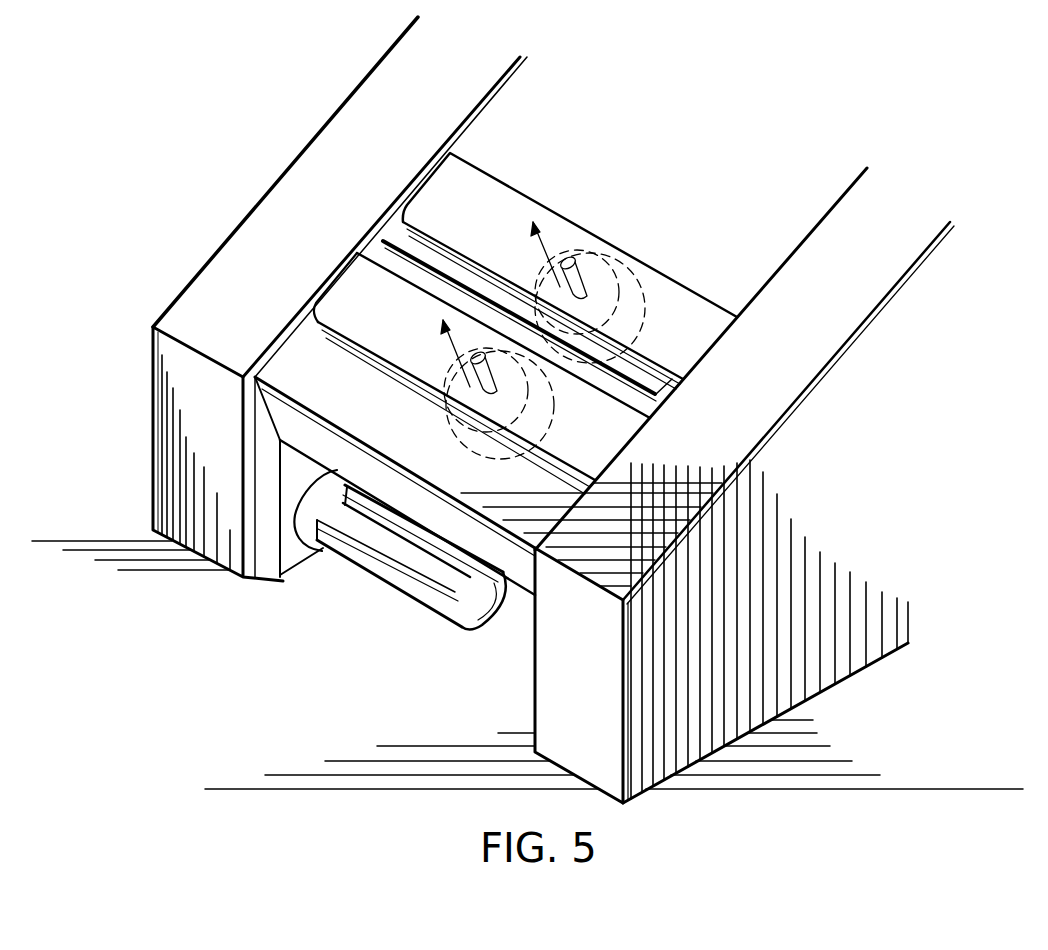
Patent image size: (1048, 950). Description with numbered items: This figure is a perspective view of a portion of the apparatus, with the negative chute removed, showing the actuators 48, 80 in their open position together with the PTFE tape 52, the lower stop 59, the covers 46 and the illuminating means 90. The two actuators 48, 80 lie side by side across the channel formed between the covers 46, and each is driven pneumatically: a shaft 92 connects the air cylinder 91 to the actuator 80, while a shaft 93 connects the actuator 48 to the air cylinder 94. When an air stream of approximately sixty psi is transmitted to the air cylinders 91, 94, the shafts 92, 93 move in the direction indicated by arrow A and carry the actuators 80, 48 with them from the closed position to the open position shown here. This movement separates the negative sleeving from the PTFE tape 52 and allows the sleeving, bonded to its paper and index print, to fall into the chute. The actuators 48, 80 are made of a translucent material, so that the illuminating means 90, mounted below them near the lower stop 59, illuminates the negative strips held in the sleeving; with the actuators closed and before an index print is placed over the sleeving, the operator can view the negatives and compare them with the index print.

The cover 46 is at (150, 420).
The actuator 48 is at (600, 453).
The PTFE tape 52 is at (657, 363).
The lower stop 59 is at (462, 628).
The actuator 80 is at (703, 292).
The illuminating means 90 is at (413, 594).
The air cylinder 91 is at (628, 342).
The shaft 92 is at (620, 253).
The shaft 93 is at (457, 373).
The air cylinder 94 is at (312, 307).